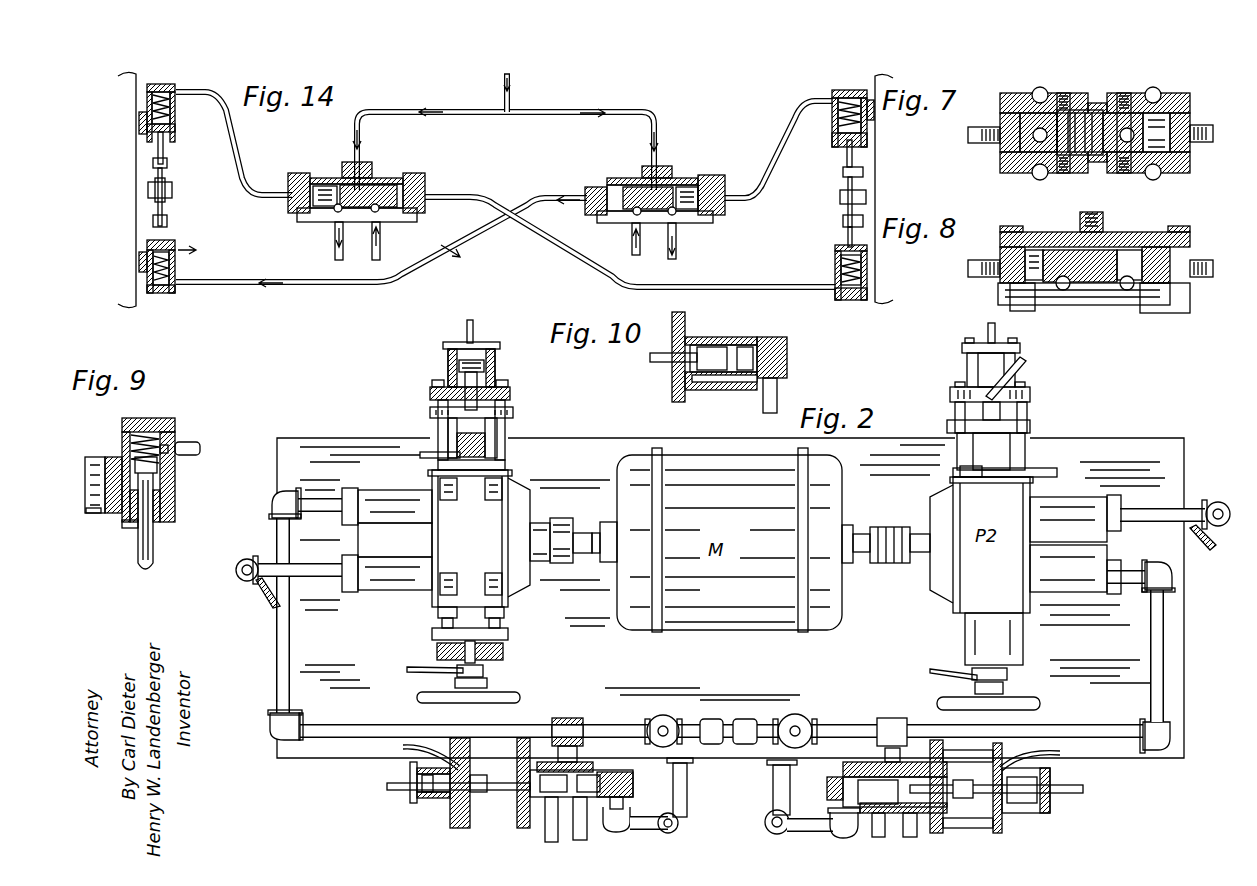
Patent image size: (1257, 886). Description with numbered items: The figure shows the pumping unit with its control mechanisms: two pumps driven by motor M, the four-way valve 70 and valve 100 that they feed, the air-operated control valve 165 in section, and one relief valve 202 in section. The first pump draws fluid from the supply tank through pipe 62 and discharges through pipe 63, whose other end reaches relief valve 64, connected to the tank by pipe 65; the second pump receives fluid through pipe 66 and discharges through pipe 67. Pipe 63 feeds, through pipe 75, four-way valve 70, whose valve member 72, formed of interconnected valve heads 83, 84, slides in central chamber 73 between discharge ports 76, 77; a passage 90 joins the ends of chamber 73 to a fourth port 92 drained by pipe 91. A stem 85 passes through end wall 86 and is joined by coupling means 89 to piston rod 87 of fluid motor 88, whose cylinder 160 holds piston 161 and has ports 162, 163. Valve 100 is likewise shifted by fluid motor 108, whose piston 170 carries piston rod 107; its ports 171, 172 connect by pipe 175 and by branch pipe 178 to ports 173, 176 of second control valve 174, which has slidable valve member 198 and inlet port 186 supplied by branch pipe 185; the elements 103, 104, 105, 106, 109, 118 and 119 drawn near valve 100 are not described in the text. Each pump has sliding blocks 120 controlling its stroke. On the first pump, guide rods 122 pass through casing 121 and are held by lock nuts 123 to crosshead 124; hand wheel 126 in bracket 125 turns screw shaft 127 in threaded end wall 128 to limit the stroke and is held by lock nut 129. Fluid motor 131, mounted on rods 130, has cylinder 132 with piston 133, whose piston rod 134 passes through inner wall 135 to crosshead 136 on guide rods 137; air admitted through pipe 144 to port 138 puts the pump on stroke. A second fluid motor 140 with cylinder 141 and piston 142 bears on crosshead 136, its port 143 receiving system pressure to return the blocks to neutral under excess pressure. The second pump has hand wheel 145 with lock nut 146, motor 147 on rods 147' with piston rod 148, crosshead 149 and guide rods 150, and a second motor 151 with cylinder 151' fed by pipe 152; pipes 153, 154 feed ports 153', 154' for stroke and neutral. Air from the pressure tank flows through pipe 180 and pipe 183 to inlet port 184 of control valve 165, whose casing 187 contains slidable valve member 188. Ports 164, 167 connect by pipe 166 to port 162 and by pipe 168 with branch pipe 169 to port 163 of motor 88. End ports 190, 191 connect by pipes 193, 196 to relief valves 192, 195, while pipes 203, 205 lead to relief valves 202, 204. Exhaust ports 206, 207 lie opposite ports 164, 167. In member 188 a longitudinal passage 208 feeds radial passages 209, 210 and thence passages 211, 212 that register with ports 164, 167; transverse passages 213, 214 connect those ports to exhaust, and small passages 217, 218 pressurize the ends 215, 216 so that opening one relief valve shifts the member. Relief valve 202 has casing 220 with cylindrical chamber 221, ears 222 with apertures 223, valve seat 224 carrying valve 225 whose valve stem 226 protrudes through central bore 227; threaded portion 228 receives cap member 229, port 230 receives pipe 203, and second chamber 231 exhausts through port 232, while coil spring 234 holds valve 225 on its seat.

In FIG. 2, the pipe 62 is at (305, 575).
In FIG. 2, the pipe 63 is at (348, 718).
In FIG. 2, the relief valve 64 is at (660, 715).
In FIG. 2, the pipe 65 is at (705, 720).
In FIG. 2, the pipe 66 is at (1160, 520).
In FIG. 2, the pipe 67 is at (1075, 722).
In FIG. 10, the four-way valve 70 is at (775, 340).
In FIG. 2, the four-way valve 70 is at (633, 785).
In FIG. 10, the valve member 72 is at (712, 350).
In FIG. 2, the valve member 72 is at (578, 830).
In FIG. 10, the central chamber 73 is at (765, 355).
In FIG. 2, the pipe 75 is at (585, 762).
In FIG. 2, the discharge port 76 is at (548, 825).
In FIG. 2, the discharge port 77 is at (612, 825).
In FIG. 10, the valve head 83 is at (705, 345).
In FIG. 2, the valve head 83 is at (553, 722).
In FIG. 10, the valve head 84 is at (735, 348).
In FIG. 2, the valve head 84 is at (582, 745).
In FIG. 10, the stem 85 is at (665, 362).
In FIG. 2, the stem 85 is at (480, 785).
In FIG. 2, the end wall 86 is at (517, 740).
In FIG. 2, the piston rod 87 is at (455, 795).
In FIG. 2, the fluid motor 88 is at (415, 795).
In FIG. 2, the coupling means 89 is at (480, 800).
In FIG. 10, the passage 90 is at (700, 382).
In FIG. 10, the pipe 91 is at (765, 405).
In FIG. 2, the pipe 91 is at (655, 830).
In FIG. 10, the fourth port 92 is at (790, 375).
In FIG. 2, the fourth port 92 is at (625, 800).
In FIG. 2, the valve 100 is at (845, 790).
In FIG. 2, the outlet 103 is at (912, 820).
In FIG. 2, the return bend 104 is at (848, 837).
In FIG. 2, the plate 105 is at (937, 740).
In FIG. 2, the piston 106 is at (880, 815).
In FIG. 2, the piston rod 107 is at (985, 830).
In FIG. 2, the fluid motor 108 is at (1035, 800).
In FIG. 2, the plate 109 is at (998, 745).
In FIG. 2, the fitting 118 is at (827, 785).
In FIG. 2, the pipe 119 is at (785, 825).
In FIG. 2, the sliding blocks 120 is at (505, 478).
In FIG. 2, the casing 121 is at (495, 565).
In FIG. 2, the guide rods 122 is at (505, 612).
In FIG. 2, the lock nuts 123 is at (438, 612).
In FIG. 2, the crosshead 124 is at (432, 632).
In FIG. 2, the bracket 125 is at (503, 650).
In FIG. 2, the hand wheel 126 is at (505, 692).
In FIG. 2, the screw shaft 127 is at (465, 650).
In FIG. 2, the end wall 128 is at (485, 670).
In FIG. 2, the lock nut 129 is at (430, 670).
In FIG. 2, the rods 130 is at (438, 420).
In FIG. 2, the fluid motor 131 is at (492, 345).
In FIG. 2, the cylinder 132 is at (490, 365).
In FIG. 2, the piston 133 is at (488, 372).
In FIG. 2, the piston rod 134 is at (450, 372).
In FIG. 2, the inner wall 135 is at (512, 393).
In FIG. 2, the crosshead 136 is at (425, 410).
In FIG. 2, the guide rods 137 is at (448, 435).
In FIG. 2, the port 138 is at (462, 342).
In FIG. 2, the second fluid motor 140 is at (448, 448).
In FIG. 2, the cylinder 141 is at (485, 448).
In FIG. 2, the piston 142 is at (513, 412).
In FIG. 2, the port 143 is at (425, 458).
In FIG. 2, the pipe 144 is at (473, 322).
In FIG. 2, the hand wheel 145 is at (1020, 697).
In FIG. 2, the lock nut 146 is at (970, 680).
In FIG. 2, the motor 147 is at (966, 362).
In FIG. 2, the rods 147' is at (991, 406).
In FIG. 2, the piston rod 148 is at (1030, 395).
In FIG. 2, the crosshead 149 is at (1030, 427).
In FIG. 2, the guide rods 150 is at (1010, 455).
In FIG. 2, the second motor 151 is at (947, 474).
In FIG. 2, the cylinder 151' is at (964, 451).
In FIG. 2, the pipe 152 is at (1040, 475).
In FIG. 2, the pipe 153 is at (974, 323).
In FIG. 2, the port 153' is at (963, 330).
In FIG. 2, the pipe 154 is at (1026, 376).
In FIG. 2, the port 154' is at (956, 372).
In FIG. 2, the cylinder 160 is at (432, 790).
In FIG. 2, the piston 161 is at (410, 770).
In FIG. 2, the port 162 is at (422, 790).
In FIG. 2, the port 163 is at (472, 782).
In FIG. 14, the port 164 is at (335, 214).
In FIG. 7, the port 164 is at (1050, 175).
In FIG. 8, the port 164 is at (1063, 290).
In FIG. 14, the control valve 165 is at (393, 180).
In FIG. 14, the pipe 166 is at (336, 250).
In FIG. 2, the pipe 166 is at (387, 785).
In FIG. 14, the port 167 is at (383, 214).
In FIG. 7, the port 167 is at (1130, 170).
In FIG. 8, the port 167 is at (1127, 292).
In FIG. 2, the pipe 168 is at (405, 752).
In FIG. 14, the branch pipe 169 is at (373, 250).
In FIG. 2, the branch pipe 169 is at (1005, 800).
In FIG. 2, the piston 170 is at (1060, 753).
In FIG. 2, the port 171 is at (1045, 785).
In FIG. 2, the port 172 is at (960, 782).
In FIG. 14, the port 173 is at (676, 222).
In FIG. 14, the second control valve 174 is at (698, 185).
In FIG. 14, the pipe 175 is at (678, 255).
In FIG. 14, the port 176 is at (636, 222).
In FIG. 14, the branch pipe 178 is at (634, 252).
In FIG. 14, the pipe 180 is at (512, 78).
In FIG. 14, the pipe 183 is at (432, 103).
In FIG. 8, the pipe 183 is at (1100, 220).
In FIG. 14, the inlet port 184 is at (372, 176).
In FIG. 8, the inlet port 184 is at (1082, 225).
In FIG. 14, the branch pipe 185 is at (630, 104).
In FIG. 14, the inlet port 186 is at (648, 180).
In FIG. 8, the casing 187 is at (1090, 300).
In FIG. 14, the slidable valve member 188 is at (345, 182).
In FIG. 8, the slidable valve member 188 is at (1068, 250).
In FIG. 7, the port 190 is at (1213, 130).
In FIG. 8, the port 190 is at (1195, 250).
In FIG. 8, the port 191 is at (970, 265).
In FIG. 14, the relief valve 192 is at (835, 245).
In FIG. 14, the pipe 193 is at (793, 282).
In FIG. 8, the pipe 193 is at (1208, 268).
In FIG. 14, the relief valve 195 is at (176, 85).
In FIG. 14, the pipe 196 is at (228, 140).
In FIG. 8, the pipe 196 is at (990, 275).
In FIG. 14, the slidable valve member 198 is at (672, 178).
In FIG. 14, the relief valve 202 is at (833, 92).
In FIG. 9, the relief valve 202 is at (165, 418).
In FIG. 14, the pipe 203 is at (793, 122).
In FIG. 9, the pipe 203 is at (200, 448).
In FIG. 14, the relief valve 204 is at (176, 240).
In FIG. 14, the pipe 205 is at (265, 275).
In FIG. 7, the exhaust port 206 is at (1077, 88).
In FIG. 7, the exhaust port 207 is at (1138, 96).
In FIG. 8, the longitudinal passage 208 is at (1118, 245).
In FIG. 8, the radial passage 209 is at (1000, 250).
In FIG. 8, the radial passage 210 is at (1150, 248).
In FIG. 7, the radial passage 211 is at (1008, 165).
In FIG. 8, the radial passage 211 is at (1035, 290).
In FIG. 7, the radial passage 212 is at (1168, 178).
In FIG. 8, the radial passage 212 is at (1140, 300).
In FIG. 7, the passage 213 is at (1075, 165).
In FIG. 7, the passage 214 is at (1100, 112).
In FIG. 7, the end 215 is at (1000, 125).
In FIG. 7, the end 216 is at (1188, 115).
In FIG. 7, the small passage 217 is at (1005, 147).
In FIG. 8, the small passage 217 is at (1010, 288).
In FIG. 7, the small passage 218 is at (1185, 155).
In FIG. 8, the small passage 218 is at (1140, 283).
In FIG. 9, the casing 220 is at (128, 430).
In FIG. 9, the cylindrical chamber 221 is at (130, 442).
In FIG. 9, the ears 222 is at (98, 515).
In FIG. 9, the aperture 223 is at (88, 475).
In FIG. 9, the valve seat 224 is at (168, 478).
In FIG. 9, the valve 225 is at (160, 465).
In FIG. 9, the valve stem 226 is at (153, 545).
In FIG. 9, the central bore 227 is at (168, 505).
In FIG. 9, the internally threaded portion 228 is at (125, 418).
In FIG. 9, the cap member 229 is at (165, 432).
In FIG. 9, the port 230 is at (165, 445).
In FIG. 9, the second chamber 231 is at (125, 523).
In FIG. 9, the exhaust port 232 is at (168, 490).
In FIG. 9, the coil spring 234 is at (130, 455).